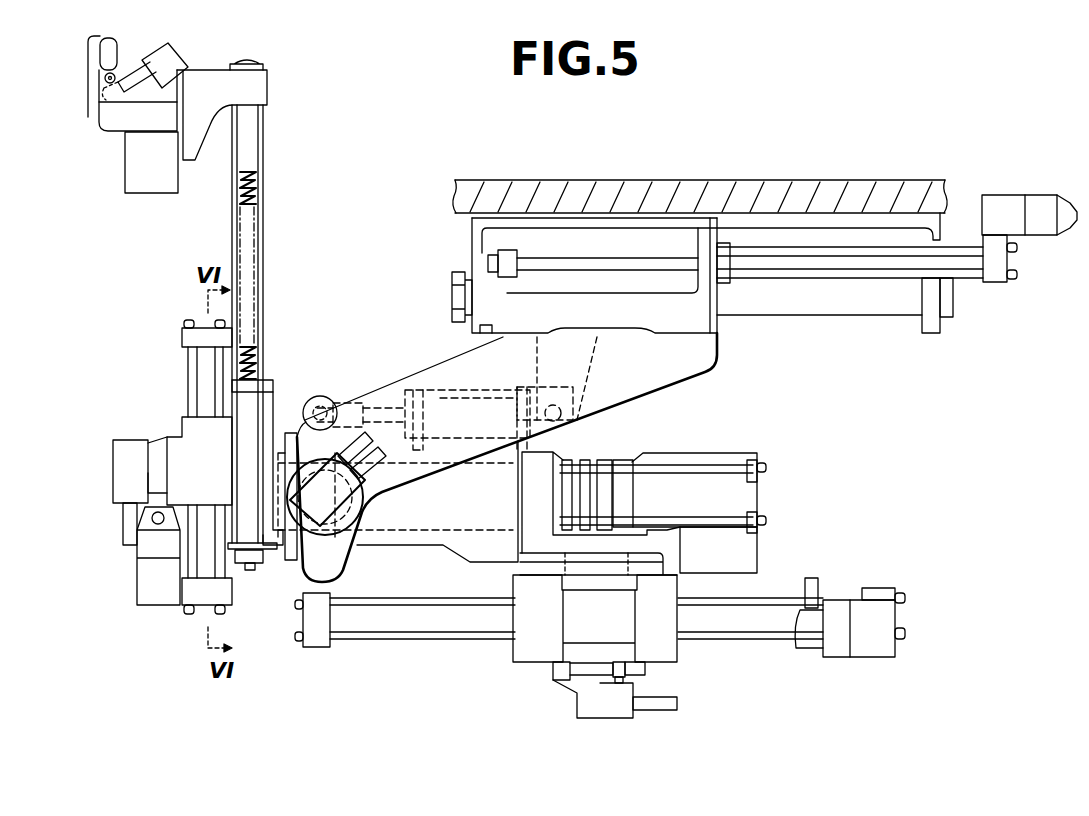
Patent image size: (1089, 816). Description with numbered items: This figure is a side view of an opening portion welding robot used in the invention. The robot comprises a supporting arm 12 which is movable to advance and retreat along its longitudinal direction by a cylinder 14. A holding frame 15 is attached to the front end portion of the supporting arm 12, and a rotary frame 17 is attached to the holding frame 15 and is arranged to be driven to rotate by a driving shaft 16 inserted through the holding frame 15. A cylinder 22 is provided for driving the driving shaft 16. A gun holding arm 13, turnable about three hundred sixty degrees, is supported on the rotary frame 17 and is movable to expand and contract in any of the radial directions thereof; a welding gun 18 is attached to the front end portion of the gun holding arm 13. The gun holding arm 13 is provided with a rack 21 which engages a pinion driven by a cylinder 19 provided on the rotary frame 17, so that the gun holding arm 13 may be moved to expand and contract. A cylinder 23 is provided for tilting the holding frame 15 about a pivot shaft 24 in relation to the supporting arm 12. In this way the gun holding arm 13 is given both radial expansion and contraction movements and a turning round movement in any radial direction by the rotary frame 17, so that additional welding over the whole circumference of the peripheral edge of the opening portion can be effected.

The supporting arm 12 is at (645, 378).
The gun holding arm 13 is at (264, 254).
The cylinder 14 is at (817, 262).
The holding frame 15 is at (408, 538).
The driving shaft 16 is at (476, 530).
The rotary frame 17 is at (270, 533).
The welding gun 18 is at (95, 55).
The cylinder 19 is at (202, 366).
The rack 21 is at (262, 184).
The cylinder 22 is at (427, 622).
The cylinder 23 is at (447, 403).
The pivot shaft 24 is at (362, 535).